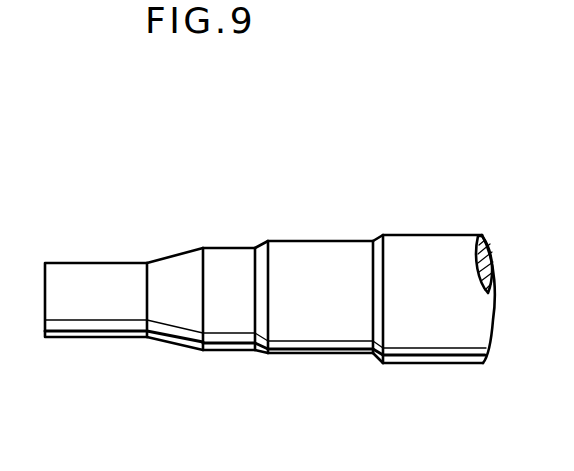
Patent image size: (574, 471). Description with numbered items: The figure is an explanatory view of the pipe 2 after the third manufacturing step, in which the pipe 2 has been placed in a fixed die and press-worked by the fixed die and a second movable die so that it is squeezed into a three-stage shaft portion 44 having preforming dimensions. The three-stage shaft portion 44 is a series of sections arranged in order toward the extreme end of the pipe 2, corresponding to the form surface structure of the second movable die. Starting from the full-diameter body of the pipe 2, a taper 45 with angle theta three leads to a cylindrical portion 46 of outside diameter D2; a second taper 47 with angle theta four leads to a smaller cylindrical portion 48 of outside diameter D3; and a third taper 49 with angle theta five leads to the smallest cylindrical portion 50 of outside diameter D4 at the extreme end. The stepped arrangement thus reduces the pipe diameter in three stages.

The pipe 2 is at (428, 243).
The three-stage shaft portion 44 is at (385, 175).
The taper 45 is at (375, 362).
The cylindrical portion 46 is at (315, 345).
The taper 47 is at (258, 360).
The cylindrical portion 48 is at (220, 357).
The taper 49 is at (172, 337).
The cylindrical portion 50 is at (96, 327).